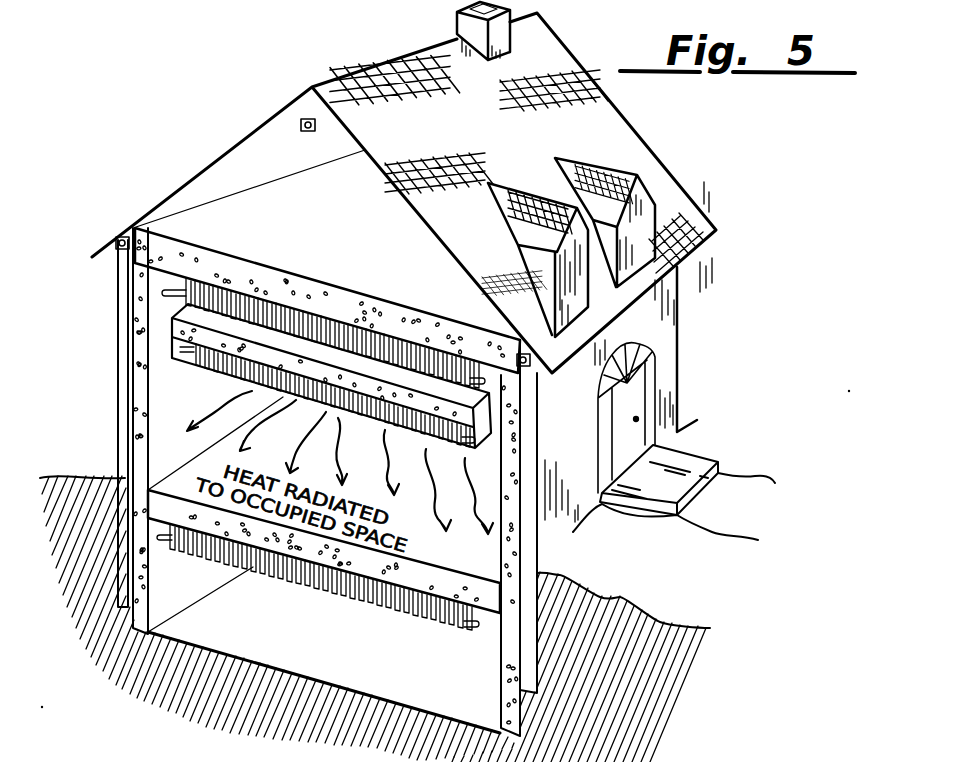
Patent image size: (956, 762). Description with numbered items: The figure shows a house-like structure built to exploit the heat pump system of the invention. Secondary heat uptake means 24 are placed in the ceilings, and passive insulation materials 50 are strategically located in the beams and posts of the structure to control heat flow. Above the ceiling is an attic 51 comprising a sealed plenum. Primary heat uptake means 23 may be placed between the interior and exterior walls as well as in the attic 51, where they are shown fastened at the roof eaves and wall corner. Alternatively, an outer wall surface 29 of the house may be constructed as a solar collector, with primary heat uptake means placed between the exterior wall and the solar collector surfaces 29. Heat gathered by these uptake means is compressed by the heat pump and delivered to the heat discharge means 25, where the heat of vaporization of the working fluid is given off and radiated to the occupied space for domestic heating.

The primary heat uptake means 23 is at (120, 237).
The secondary heat uptake means 24 is at (176, 294).
The heat discharge means 25 is at (192, 363).
The outer wall surface 29 is at (618, 147).
The passive insulation materials 50 is at (146, 419).
The attic 51 is at (325, 268).